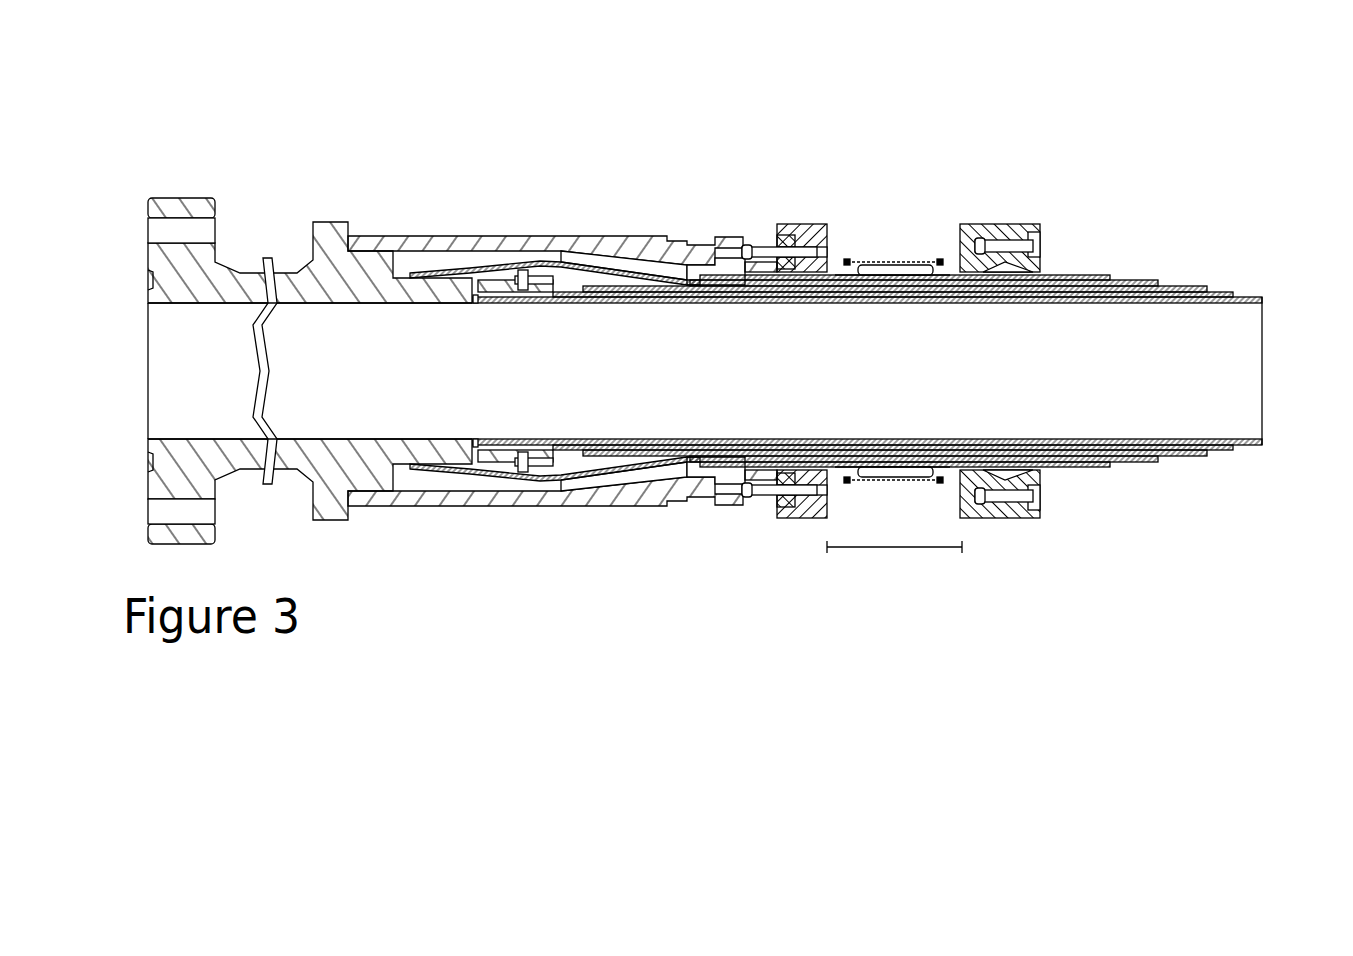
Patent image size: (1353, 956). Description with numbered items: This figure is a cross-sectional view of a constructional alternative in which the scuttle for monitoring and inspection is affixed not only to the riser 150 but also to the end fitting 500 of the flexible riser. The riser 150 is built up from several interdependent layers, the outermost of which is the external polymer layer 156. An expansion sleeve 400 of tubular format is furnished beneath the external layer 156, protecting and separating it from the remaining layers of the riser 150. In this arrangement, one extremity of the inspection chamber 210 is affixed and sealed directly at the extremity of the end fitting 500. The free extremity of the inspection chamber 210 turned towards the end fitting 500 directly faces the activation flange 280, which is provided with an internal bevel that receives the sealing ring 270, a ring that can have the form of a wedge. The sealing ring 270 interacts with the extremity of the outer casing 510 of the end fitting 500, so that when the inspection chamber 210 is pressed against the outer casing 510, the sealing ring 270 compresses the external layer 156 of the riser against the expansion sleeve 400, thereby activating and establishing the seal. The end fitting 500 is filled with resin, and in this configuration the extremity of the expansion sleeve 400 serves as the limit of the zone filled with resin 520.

The end fitting 500 is at (323, 233).
The outer casing 510 is at (549, 241).
The zone filled with resin 520 is at (664, 270).
The expansion sleeve 400 is at (712, 272).
The external polymer layer 156 is at (716, 271).
The sealing ring 270 is at (736, 268).
The activation flange 280 is at (823, 224).
The riser 150 is at (1192, 344).
The inspection chamber 210 is at (894, 567).